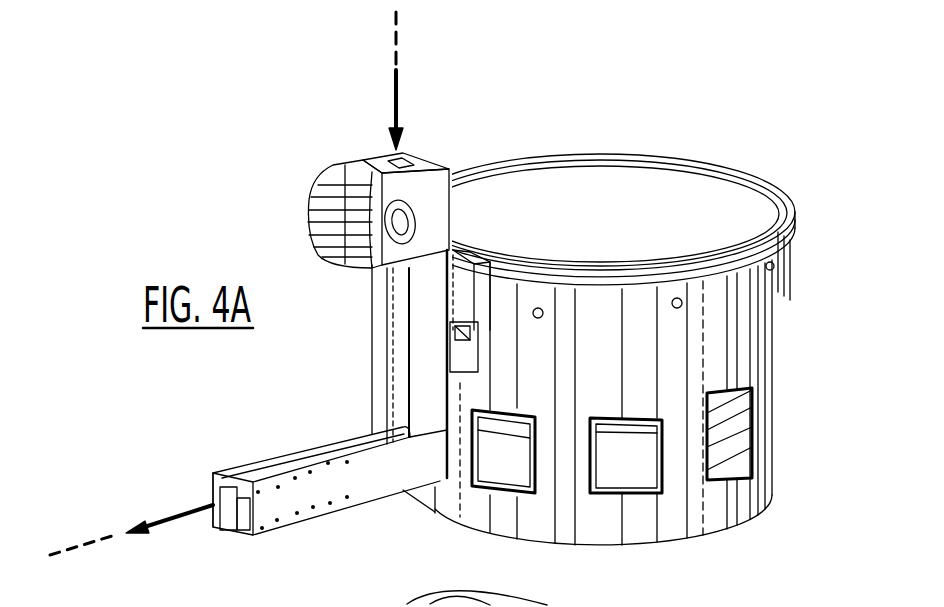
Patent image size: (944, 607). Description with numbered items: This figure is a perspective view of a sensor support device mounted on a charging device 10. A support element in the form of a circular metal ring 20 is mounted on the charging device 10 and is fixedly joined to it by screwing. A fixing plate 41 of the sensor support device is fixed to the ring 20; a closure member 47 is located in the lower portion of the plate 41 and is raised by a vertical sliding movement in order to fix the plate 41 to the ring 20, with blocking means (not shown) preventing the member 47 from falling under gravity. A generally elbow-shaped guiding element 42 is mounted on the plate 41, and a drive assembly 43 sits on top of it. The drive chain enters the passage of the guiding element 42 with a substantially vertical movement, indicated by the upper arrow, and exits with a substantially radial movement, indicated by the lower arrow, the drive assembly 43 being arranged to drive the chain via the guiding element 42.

The charging device 10 is at (682, 503).
The circular metal ring 20 is at (792, 263).
The fixing plate 41 is at (484, 365).
The guiding element 42 is at (423, 357).
The drive assembly 43 is at (345, 147).
The closure member 47 is at (483, 347).